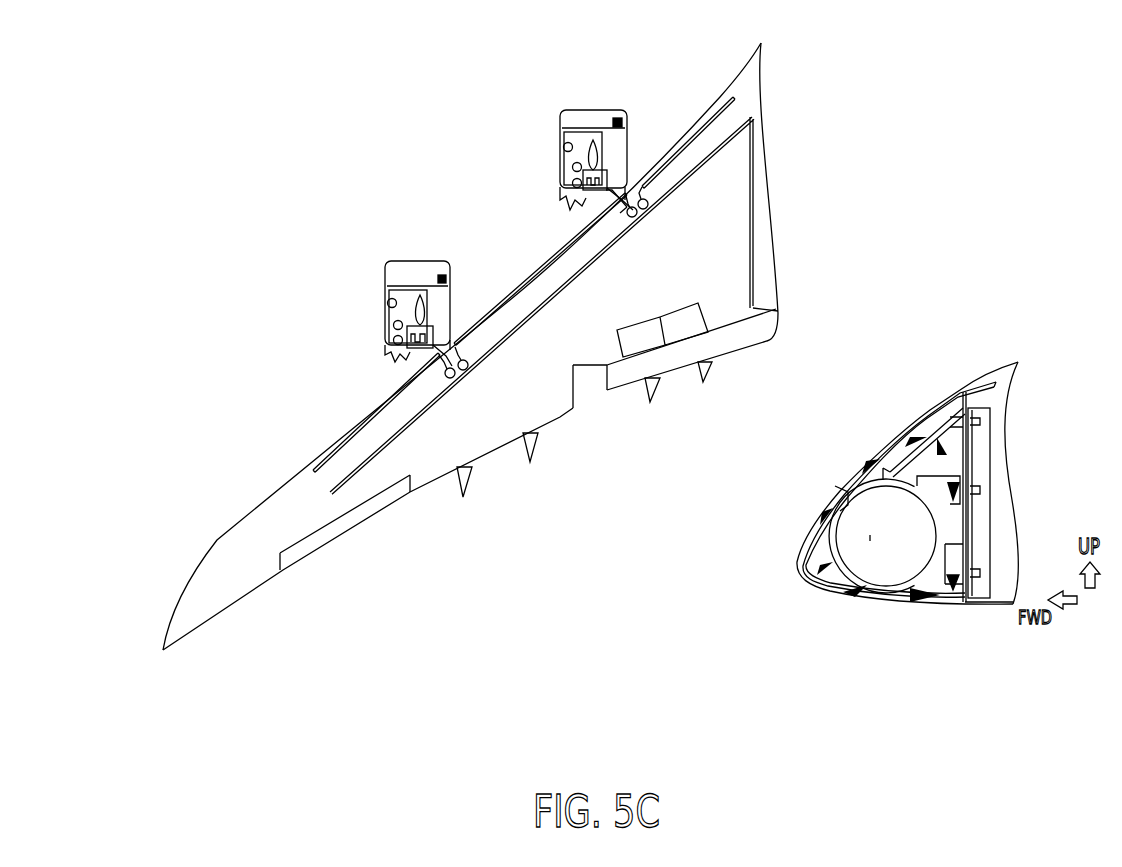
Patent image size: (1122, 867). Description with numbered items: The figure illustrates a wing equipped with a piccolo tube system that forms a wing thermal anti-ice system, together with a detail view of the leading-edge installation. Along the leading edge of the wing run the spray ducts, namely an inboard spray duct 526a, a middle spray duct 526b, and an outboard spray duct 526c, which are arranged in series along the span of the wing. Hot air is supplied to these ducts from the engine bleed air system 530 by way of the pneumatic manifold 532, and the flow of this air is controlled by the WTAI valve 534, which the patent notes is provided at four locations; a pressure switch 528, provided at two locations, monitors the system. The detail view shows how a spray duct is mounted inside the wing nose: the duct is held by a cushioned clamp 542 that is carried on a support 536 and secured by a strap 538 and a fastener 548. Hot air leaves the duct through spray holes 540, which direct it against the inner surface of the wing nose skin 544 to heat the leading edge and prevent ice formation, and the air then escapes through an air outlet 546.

In FIG. 5C, the inboard spray duct 526a is at (722, 97).
In FIG. 5D, the inboard spray duct 526a is at (795, 544).
In FIG. 5C, the middle spray duct 526b is at (511, 290).
In FIG. 5D, the middle spray duct 526b is at (795, 544).
In FIG. 5C, the outboard spray duct 526c is at (313, 460).
In FIG. 5D, the outboard spray duct 526c is at (855, 540).
In FIG. 5C, the pressure switch 528 is at (616, 183).
In FIG. 5C, the engine bleed air system 530 is at (556, 170).
In FIG. 5C, the pneumatic manifold 532 is at (598, 252).
In FIG. 5C, the WTAI valve 534 is at (478, 382).
In FIG. 5D, the support 536 is at (959, 396).
In FIG. 5D, the strap 538 is at (897, 452).
In FIG. 5D, the spray holes 540 is at (834, 488).
In FIG. 5D, the cushioned clamp 542 is at (815, 537).
In FIG. 5D, the wing nose skin 544 is at (822, 602).
In FIG. 5D, the air outlet 546 is at (953, 612).
In FIG. 5D, the fastener 548 is at (988, 483).